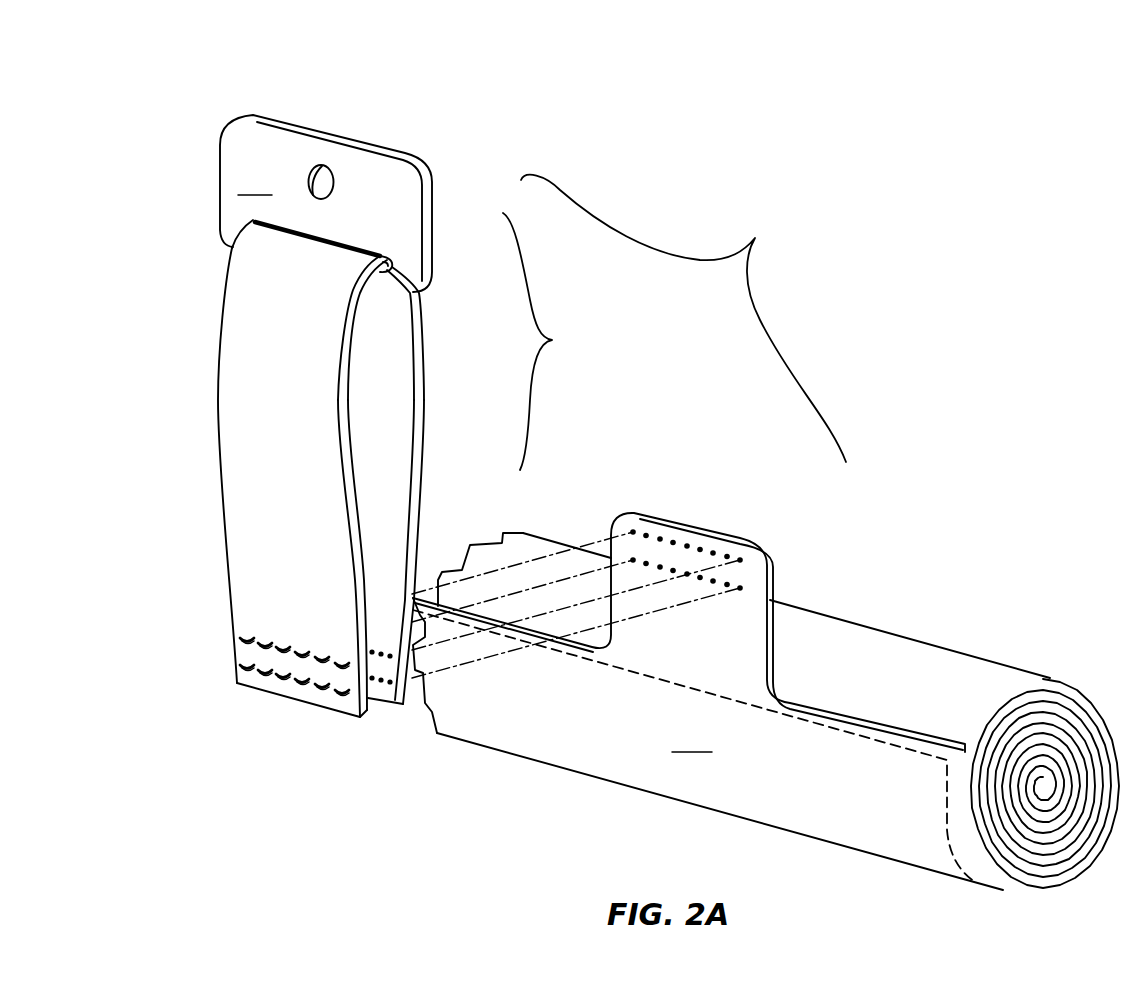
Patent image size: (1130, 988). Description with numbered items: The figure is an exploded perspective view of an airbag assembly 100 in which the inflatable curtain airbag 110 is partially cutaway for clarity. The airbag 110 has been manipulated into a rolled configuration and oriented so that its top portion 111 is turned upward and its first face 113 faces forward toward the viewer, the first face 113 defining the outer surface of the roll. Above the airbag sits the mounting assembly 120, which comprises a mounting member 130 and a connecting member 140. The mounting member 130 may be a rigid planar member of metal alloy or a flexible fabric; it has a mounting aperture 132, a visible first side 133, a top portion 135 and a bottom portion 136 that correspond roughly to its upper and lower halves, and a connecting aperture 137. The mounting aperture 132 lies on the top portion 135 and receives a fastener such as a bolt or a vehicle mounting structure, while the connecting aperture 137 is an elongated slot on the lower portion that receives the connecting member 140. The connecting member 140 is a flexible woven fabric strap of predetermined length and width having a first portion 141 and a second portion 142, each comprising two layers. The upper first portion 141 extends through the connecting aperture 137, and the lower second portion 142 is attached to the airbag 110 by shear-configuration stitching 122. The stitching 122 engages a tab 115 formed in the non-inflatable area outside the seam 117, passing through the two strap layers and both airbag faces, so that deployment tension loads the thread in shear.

The airbag assembly 100 is at (683, 318).
The inflatable curtain airbag 110 is at (765, 701).
The top portion 111 is at (907, 773).
The first face 113 is at (731, 711).
The tab 115 is at (740, 612).
The seam 117 is at (660, 680).
The mounting assembly 120 is at (552, 341).
The shear-configuration stitching 122 is at (317, 693).
The mounting member 130 is at (361, 160).
The mounting aperture 132 is at (318, 163).
The first side 133 is at (386, 180).
The top portion 135 is at (388, 223).
The bottom portion 136 is at (408, 267).
The connecting aperture 137 is at (413, 289).
The connecting member 140 is at (256, 491).
The first portion 141 is at (253, 255).
The second portion 142 is at (263, 590).